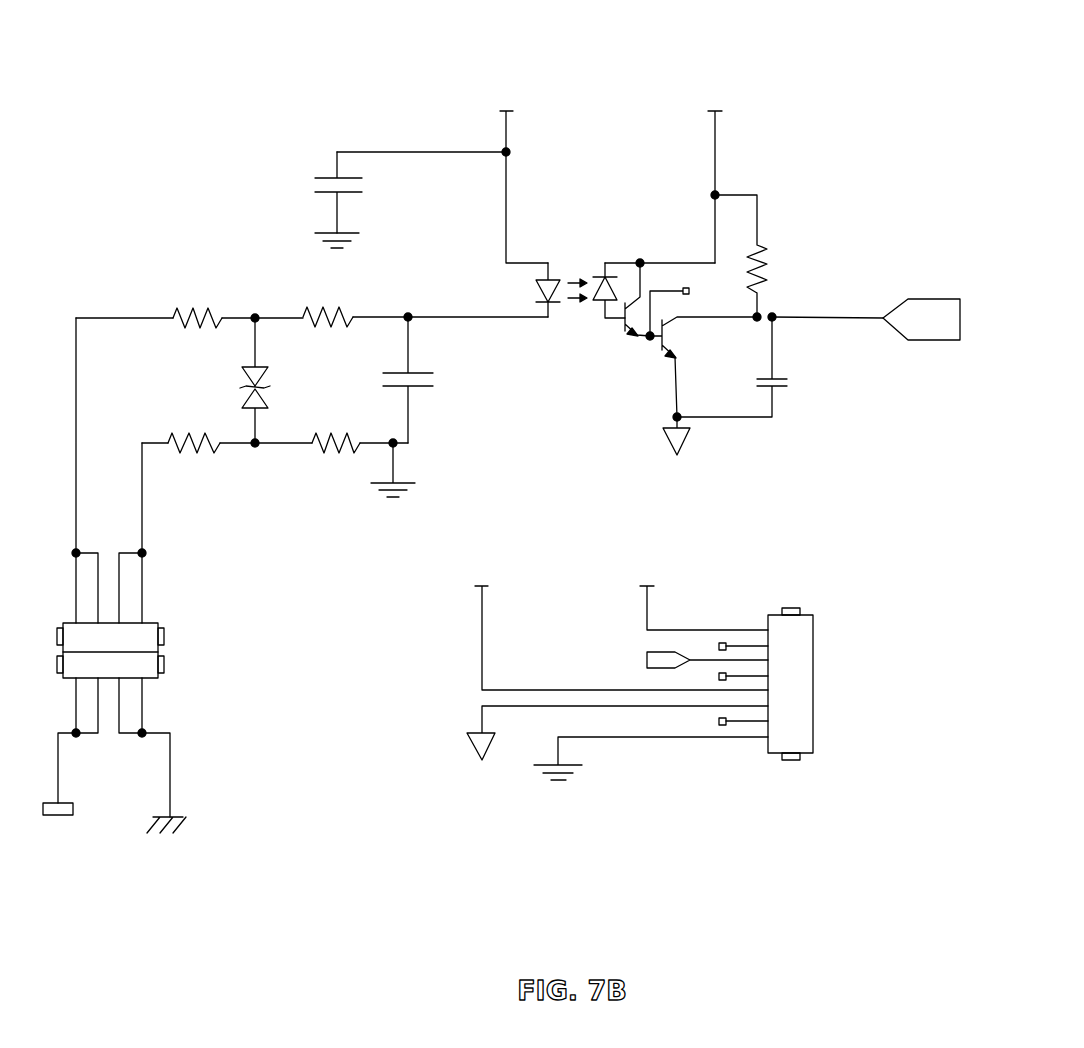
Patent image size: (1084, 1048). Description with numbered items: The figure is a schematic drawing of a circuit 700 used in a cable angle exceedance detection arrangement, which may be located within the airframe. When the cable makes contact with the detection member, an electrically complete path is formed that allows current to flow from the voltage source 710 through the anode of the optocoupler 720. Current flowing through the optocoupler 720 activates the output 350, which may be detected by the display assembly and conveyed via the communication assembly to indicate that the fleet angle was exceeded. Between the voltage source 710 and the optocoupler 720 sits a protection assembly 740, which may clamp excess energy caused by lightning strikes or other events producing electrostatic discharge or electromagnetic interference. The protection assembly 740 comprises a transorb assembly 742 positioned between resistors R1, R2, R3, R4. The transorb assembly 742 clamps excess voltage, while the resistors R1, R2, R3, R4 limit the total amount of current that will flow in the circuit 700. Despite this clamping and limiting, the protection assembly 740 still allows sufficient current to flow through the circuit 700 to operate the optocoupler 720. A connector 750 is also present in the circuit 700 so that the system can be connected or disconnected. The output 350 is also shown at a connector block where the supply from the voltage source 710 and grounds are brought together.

The circuit 700 is at (638, 82).
The voltage source 710 is at (628, 354).
The optocoupler 720 is at (646, 327).
The protection assembly 740 is at (268, 470).
The transorb assembly 742 is at (232, 380).
The connector 750 is at (125, 691).
The output 350 is at (938, 298).
The resistor R1 is at (194, 456).
The resistor R2 is at (336, 456).
The resistor R3 is at (197, 300).
The resistor R4 is at (328, 303).